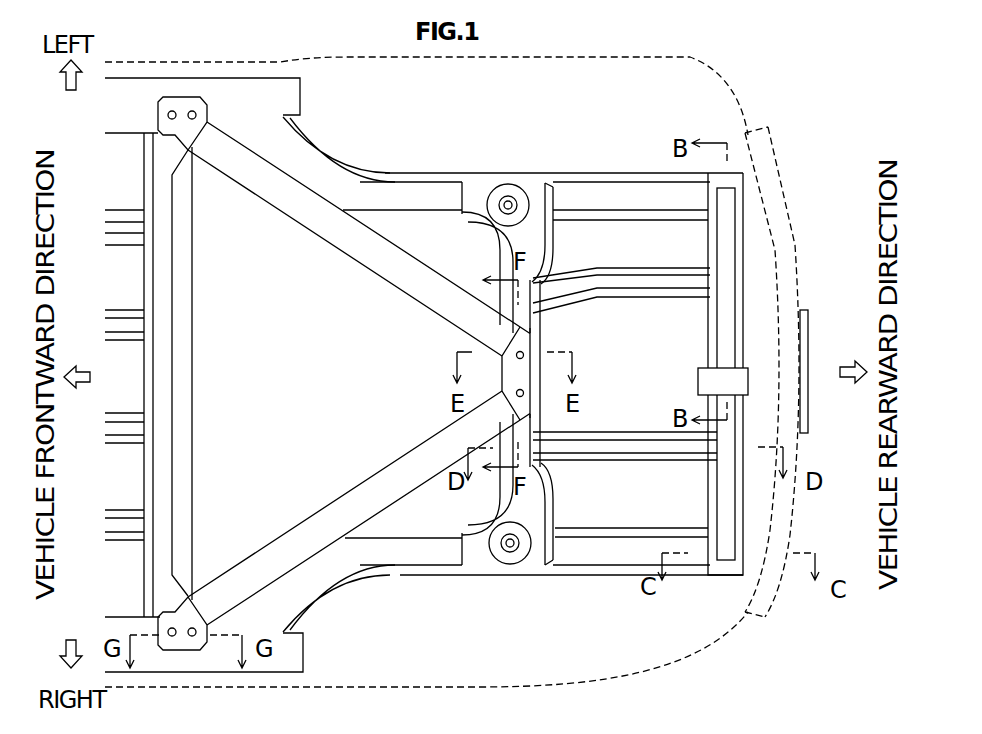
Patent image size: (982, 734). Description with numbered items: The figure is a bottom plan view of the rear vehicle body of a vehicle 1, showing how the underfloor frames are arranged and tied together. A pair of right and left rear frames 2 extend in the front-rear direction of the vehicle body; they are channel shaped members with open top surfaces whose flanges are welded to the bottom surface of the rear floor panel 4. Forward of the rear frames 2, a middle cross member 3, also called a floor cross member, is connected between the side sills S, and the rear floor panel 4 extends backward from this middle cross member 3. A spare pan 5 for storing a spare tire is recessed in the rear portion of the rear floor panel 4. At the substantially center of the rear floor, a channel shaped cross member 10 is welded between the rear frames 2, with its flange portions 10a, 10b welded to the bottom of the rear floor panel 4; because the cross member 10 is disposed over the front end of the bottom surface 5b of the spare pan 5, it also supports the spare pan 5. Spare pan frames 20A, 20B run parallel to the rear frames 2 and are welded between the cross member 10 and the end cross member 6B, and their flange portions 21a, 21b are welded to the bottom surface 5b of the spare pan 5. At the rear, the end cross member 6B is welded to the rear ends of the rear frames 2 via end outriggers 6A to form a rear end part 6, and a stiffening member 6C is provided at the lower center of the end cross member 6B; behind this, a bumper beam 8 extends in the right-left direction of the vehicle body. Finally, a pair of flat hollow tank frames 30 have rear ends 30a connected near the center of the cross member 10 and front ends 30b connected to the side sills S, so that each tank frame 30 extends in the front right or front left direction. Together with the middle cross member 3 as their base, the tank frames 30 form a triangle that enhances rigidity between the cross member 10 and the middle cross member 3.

The vehicle 1 is at (761, 72).
The side sill S is at (226, 100).
The rear frame 2 is at (366, 196).
The middle cross member 3 is at (183, 268).
The rear floor panel 4 is at (265, 450).
The spare pan 5 is at (669, 313).
The bottom surface of the spare pan 5b is at (647, 420).
The rear end part 6 is at (750, 248).
The end outrigger 6A is at (726, 205).
The end cross member 6B is at (728, 338).
The stiffening member 6C is at (735, 382).
The bumper beam 8 is at (770, 150).
The cross member 10 is at (484, 190).
The flange portion 10a is at (477, 223).
The flange portion 10b is at (552, 180).
The spare pan frame 20A is at (580, 286).
The spare pan frame 20B is at (582, 443).
The flange portion 21a is at (623, 293).
The flange portion 21b is at (620, 272).
The tank frame 30 is at (315, 217).
The rear end 30a is at (497, 329).
The front end 30b is at (208, 149).